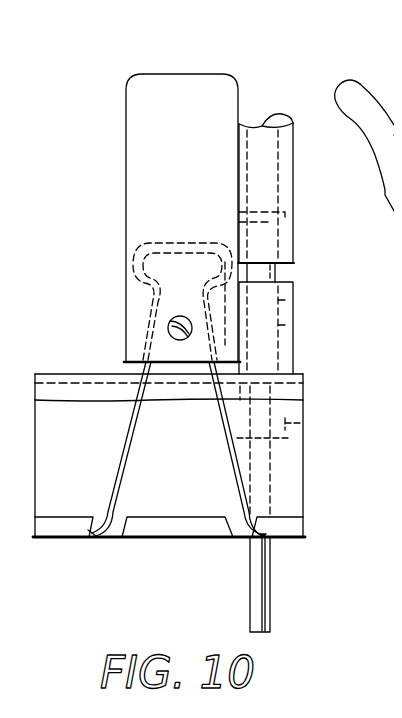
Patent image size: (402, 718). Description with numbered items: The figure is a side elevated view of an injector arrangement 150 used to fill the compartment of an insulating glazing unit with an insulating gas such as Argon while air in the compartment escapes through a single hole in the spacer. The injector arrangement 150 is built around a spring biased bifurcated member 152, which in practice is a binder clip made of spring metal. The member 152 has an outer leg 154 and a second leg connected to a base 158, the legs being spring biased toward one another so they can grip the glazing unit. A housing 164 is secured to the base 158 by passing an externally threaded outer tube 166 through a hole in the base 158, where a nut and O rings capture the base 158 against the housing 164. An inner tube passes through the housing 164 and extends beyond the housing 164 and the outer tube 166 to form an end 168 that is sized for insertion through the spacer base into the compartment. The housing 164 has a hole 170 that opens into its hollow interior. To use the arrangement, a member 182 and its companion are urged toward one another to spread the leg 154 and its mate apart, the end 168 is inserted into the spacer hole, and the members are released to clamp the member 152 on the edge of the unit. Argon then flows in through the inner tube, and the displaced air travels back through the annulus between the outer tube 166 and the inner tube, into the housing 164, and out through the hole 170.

The injector arrangement 150 is at (208, 323).
The spring biased bifurcated member 152 is at (208, 445).
The outer leg 154 is at (152, 538).
The base 158 is at (70, 373).
The housing 164 is at (293, 362).
The outer tube 166 is at (300, 422).
The end of inner tube 168 is at (250, 600).
The hole 170 is at (293, 332).
The member 182 is at (188, 80).